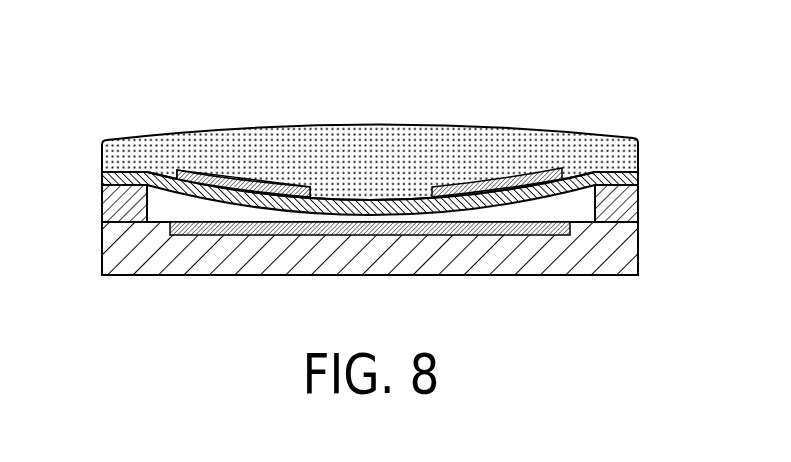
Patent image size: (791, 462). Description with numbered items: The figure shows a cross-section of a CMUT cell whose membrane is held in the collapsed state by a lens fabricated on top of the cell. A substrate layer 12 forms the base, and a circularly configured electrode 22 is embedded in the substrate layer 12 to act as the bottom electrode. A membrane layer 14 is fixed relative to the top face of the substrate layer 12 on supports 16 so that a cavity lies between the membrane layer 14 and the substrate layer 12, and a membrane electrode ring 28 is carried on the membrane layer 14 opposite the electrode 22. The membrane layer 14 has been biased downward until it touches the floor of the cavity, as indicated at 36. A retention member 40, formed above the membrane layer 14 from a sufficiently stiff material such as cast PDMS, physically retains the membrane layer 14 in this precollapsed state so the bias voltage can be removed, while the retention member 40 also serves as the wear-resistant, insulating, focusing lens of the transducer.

The substrate layer 12 is at (102, 249).
The membrane layer 14 is at (638, 176).
The support posts 16 is at (102, 203).
The electrode 22 is at (530, 236).
The membrane electrode ring 28 is at (247, 183).
The contact point of membrane with cavity floor 36 is at (377, 220).
The retention member 40 is at (365, 147).